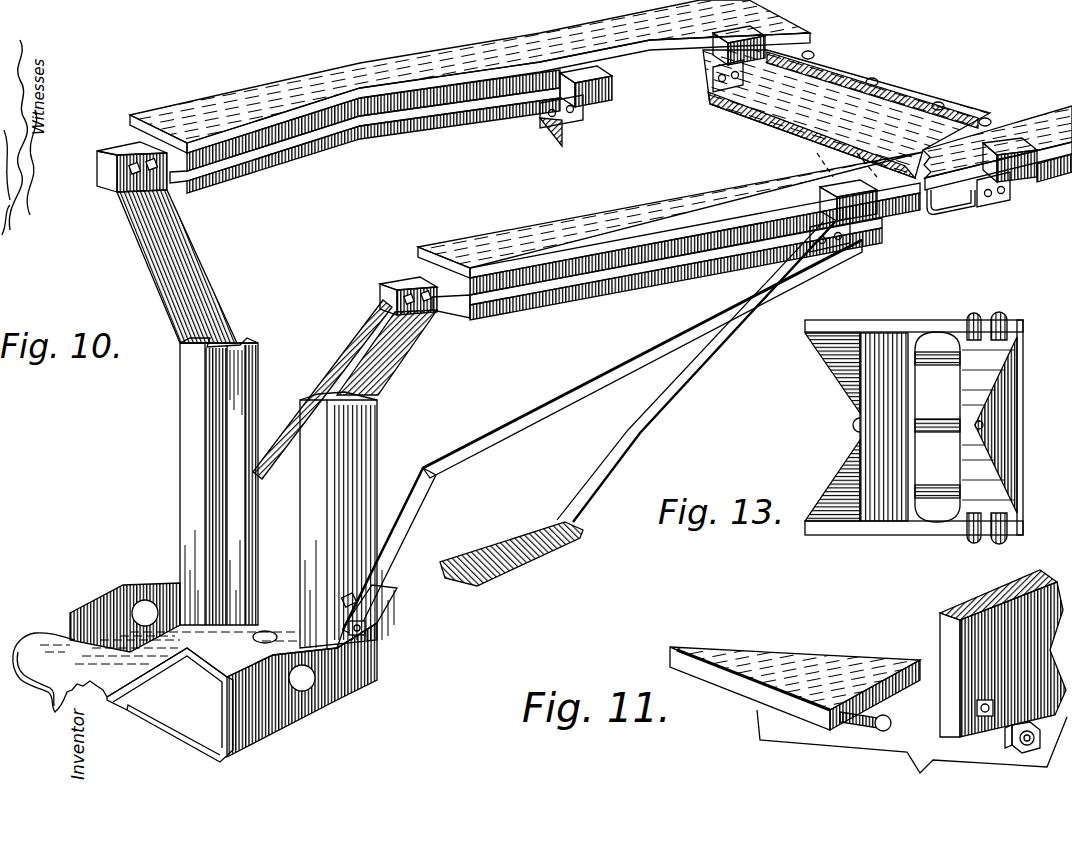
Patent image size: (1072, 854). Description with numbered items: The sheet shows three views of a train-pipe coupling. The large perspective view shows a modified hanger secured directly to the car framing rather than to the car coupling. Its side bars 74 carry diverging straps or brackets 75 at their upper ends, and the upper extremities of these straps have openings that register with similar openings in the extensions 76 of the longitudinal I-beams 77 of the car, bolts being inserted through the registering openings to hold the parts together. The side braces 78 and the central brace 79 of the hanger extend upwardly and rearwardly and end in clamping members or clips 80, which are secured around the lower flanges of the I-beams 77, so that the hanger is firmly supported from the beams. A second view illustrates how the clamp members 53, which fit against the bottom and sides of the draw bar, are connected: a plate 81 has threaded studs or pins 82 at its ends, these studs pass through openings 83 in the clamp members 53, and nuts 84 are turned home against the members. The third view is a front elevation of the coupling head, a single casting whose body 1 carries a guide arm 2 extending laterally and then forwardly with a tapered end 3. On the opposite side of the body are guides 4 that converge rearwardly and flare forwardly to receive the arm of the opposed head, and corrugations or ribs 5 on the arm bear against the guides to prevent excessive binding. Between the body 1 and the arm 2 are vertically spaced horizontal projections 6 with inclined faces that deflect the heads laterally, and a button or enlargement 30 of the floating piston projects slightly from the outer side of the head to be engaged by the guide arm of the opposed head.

In FIG. 10, the side bars 74 is at (190, 412).
In FIG. 10, the diverging straps or brackets 75 is at (186, 263).
In FIG. 10, the extensions of the I-beams 76 is at (98, 168).
In FIG. 10, the longitudinal I-beams 77 is at (340, 152).
In FIG. 10, the side braces 78 is at (357, 343).
In FIG. 10, the central brace 79 is at (630, 432).
In FIG. 10, the clamping members or clips 80 is at (598, 92).
In FIG. 13, the body 1 is at (914, 417).
In FIG. 13, the guide arm 2 is at (988, 425).
In FIG. 13, the tapered end 3 is at (984, 431).
In FIG. 13, the guides 4 is at (807, 350).
In FIG. 13, the corrugations or ribs 5 is at (977, 320).
In FIG. 13, the horizontal projections 6 is at (950, 364).
In FIG. 13, the button or enlargement 30 is at (853, 424).
In FIG. 11, the plate 81 is at (800, 665).
In FIG. 11, the threaded studs or pins 82 is at (889, 719).
In FIG. 11, the openings 83 is at (1003, 653).
In FIG. 11, the straps or plates (clamp members) 53 is at (1011, 619).
In FIG. 11, the nuts 84 is at (1017, 750).